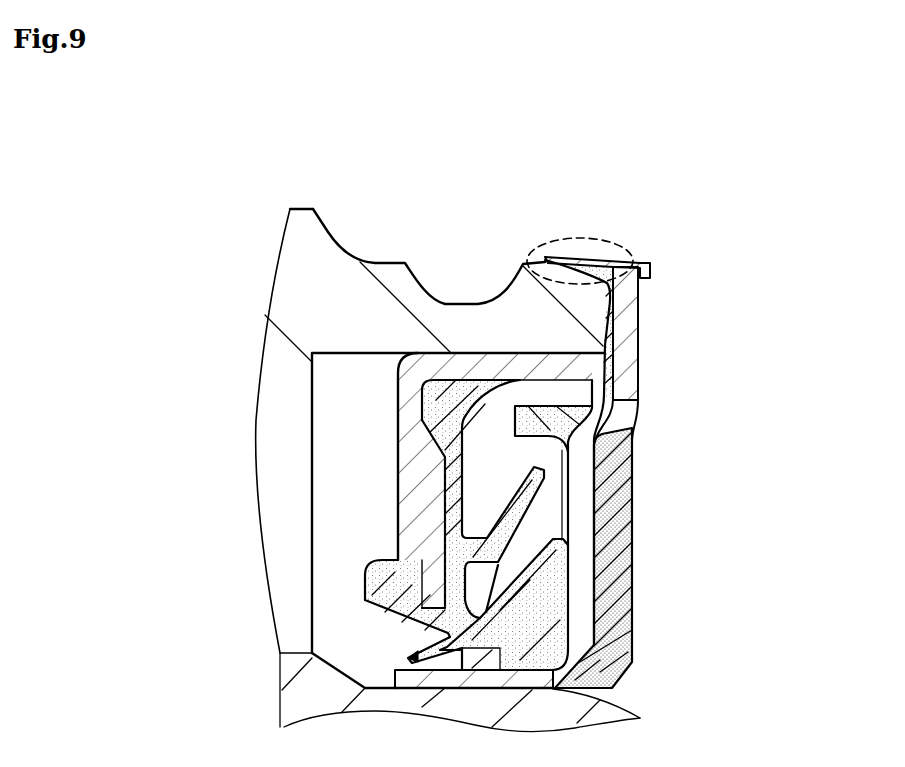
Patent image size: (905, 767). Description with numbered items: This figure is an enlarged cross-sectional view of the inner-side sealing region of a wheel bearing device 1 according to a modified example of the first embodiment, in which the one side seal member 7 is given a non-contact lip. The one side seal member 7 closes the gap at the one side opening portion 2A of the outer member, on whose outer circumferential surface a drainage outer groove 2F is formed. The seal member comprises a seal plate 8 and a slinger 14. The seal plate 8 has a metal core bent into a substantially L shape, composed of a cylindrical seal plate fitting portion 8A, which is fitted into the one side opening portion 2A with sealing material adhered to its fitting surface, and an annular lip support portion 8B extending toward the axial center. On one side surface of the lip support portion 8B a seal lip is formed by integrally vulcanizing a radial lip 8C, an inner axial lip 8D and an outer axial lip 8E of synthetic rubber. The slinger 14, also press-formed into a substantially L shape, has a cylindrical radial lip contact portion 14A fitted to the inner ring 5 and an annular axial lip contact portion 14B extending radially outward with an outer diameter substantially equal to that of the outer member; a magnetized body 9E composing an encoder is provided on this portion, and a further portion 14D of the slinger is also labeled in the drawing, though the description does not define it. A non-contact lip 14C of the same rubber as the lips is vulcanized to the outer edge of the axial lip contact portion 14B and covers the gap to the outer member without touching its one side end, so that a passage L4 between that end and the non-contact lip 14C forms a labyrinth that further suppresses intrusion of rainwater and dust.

The wheel bearing device 1 is at (325, 419).
The one side opening portion 2A is at (429, 432).
The drainage outer groove 2F is at (458, 468).
The inner ring 5 is at (478, 708).
The one side seal member 7 is at (721, 149).
The seal plate 8 is at (506, 465).
The seal plate fitting portion 8A is at (605, 465).
The lip support portion 8B is at (418, 525).
The radial lip 8C is at (369, 641).
The inner axial lip 8D is at (563, 593).
The outer axial lip 8E is at (564, 561).
The magnetized body 9E is at (539, 558).
The slinger 14 is at (543, 485).
The radial lip contact portion 14A is at (474, 707).
The axial lip contact portion 14B is at (669, 356).
The non-contact lip 14C is at (597, 241).
The core metal axial portion 14D is at (467, 480).
The passage L4 is at (560, 231).